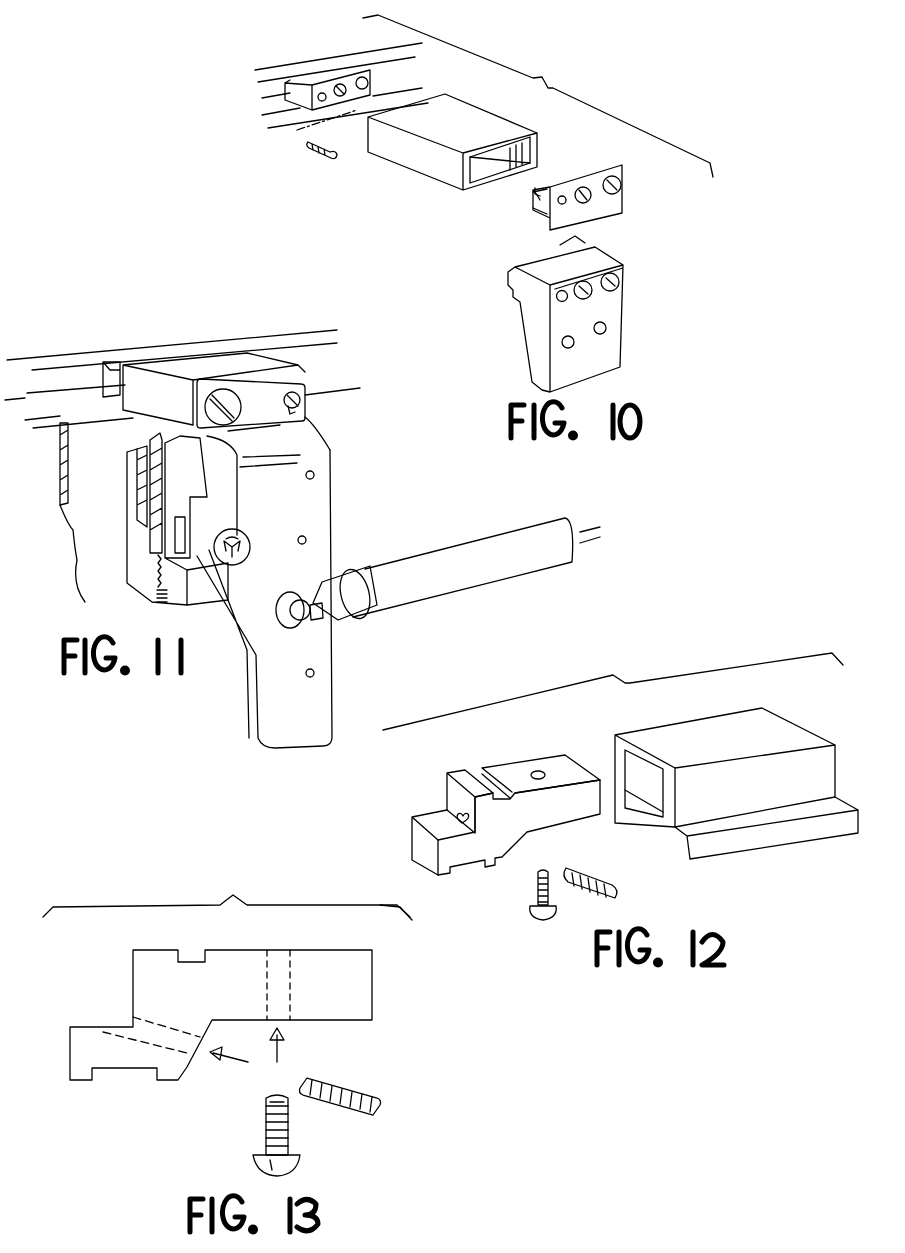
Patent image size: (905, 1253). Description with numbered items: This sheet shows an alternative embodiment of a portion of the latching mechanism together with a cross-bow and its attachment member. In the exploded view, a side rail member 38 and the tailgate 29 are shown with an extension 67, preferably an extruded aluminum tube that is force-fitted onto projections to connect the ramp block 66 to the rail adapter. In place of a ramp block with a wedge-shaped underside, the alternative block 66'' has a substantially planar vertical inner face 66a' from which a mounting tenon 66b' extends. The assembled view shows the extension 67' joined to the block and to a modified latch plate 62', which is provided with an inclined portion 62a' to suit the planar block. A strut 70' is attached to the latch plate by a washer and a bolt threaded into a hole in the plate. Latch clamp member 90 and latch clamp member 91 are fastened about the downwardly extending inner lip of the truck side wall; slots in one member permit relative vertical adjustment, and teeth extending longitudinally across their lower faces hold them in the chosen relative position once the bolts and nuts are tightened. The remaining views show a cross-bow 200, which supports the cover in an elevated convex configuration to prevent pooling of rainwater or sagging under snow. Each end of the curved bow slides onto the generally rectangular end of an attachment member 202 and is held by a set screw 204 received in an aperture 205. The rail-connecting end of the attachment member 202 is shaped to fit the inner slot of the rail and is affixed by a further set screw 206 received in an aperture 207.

In FIG. 10, the side rail member 38 is at (275, 70).
In FIG. 11, the side rail member 38 is at (57, 355).
In FIG. 10, the tailgate 29 is at (352, 80).
In FIG. 11, the tailgate 29 is at (108, 393).
In FIG. 10, the extension 67 is at (444, 151).
In FIG. 10, the block 66'' is at (577, 177).
In FIG. 11, the block 66'' is at (251, 363).
In FIG. 10, the vertical inner face 66a' is at (629, 211).
In FIG. 10, the mounting tenon 66b' is at (501, 214).
In FIG. 10, the ramp block 66 is at (545, 319).
In FIG. 11, the extension 67' is at (214, 360).
In FIG. 11, the inclined portion 62a' is at (325, 442).
In FIG. 11, the latch plate 62' is at (297, 592).
In FIG. 11, the strut 70' is at (438, 555).
In FIG. 11, the latch clamp member 91 is at (168, 470).
In FIG. 11, the latch clamp member 90 is at (132, 503).
In FIG. 12, the cross-bow 200 is at (727, 727).
In FIG. 12, the attachment member 202 is at (521, 745).
In FIG. 13, the attachment member 202 is at (123, 964).
In FIG. 12, the set screw 204 is at (530, 893).
In FIG. 13, the set screw 204 is at (266, 1133).
In FIG. 12, the set screw 206 is at (613, 885).
In FIG. 13, the set screw 206 is at (355, 1080).
In FIG. 13, the aperture 205 is at (285, 962).
In FIG. 13, the aperture 207 is at (133, 1020).